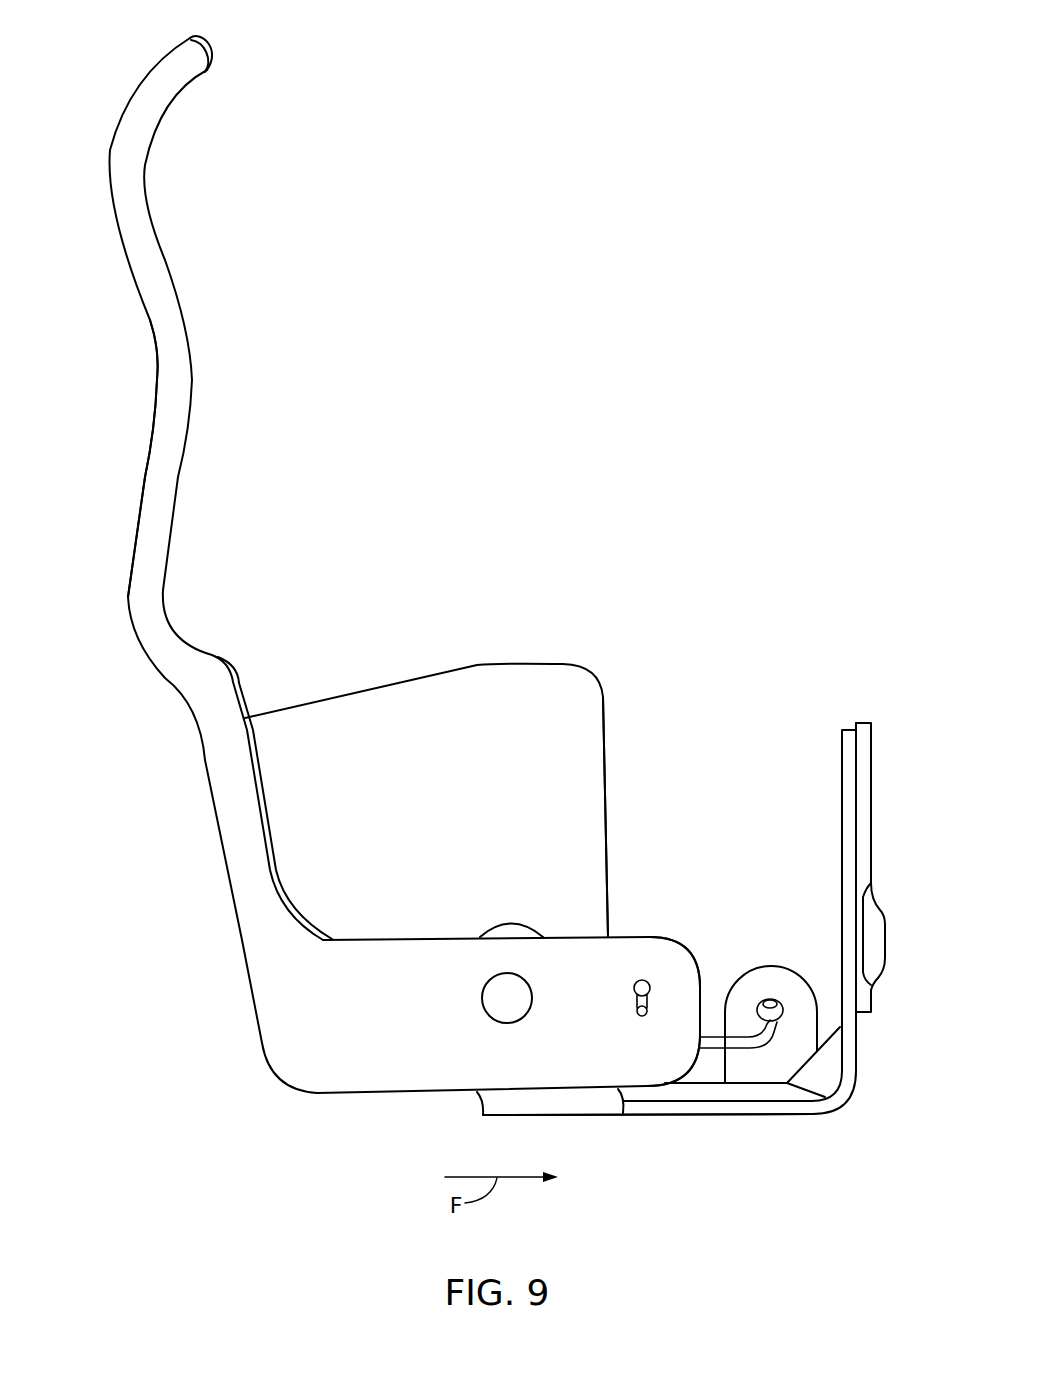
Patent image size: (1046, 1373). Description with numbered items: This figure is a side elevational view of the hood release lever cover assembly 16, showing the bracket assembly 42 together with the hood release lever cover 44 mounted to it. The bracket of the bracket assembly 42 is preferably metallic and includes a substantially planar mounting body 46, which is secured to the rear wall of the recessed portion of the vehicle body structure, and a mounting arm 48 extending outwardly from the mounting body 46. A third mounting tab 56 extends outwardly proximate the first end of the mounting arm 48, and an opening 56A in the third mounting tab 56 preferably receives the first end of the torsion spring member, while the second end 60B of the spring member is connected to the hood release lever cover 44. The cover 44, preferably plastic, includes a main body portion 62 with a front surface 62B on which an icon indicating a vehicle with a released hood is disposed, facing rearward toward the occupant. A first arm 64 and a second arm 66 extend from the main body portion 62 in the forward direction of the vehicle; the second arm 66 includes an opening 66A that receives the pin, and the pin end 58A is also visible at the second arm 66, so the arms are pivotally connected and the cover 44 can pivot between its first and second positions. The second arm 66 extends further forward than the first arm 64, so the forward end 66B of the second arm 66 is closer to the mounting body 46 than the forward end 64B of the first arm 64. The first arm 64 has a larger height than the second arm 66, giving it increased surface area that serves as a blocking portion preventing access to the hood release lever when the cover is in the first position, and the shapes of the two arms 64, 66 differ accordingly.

The hood release lever cover assembly 16 is at (615, 390).
The bracket assembly 42 is at (826, 1124).
The hood release lever cover 44 is at (145, 477).
The mounting body 46 is at (871, 842).
The mounting arm 48 is at (750, 1107).
The third mounting tab 56 is at (797, 1007).
The opening 56A is at (770, 1005).
The aperture 58A is at (507, 1003).
The second end of the spring member 60B is at (642, 1014).
The main body portion 62 is at (160, 285).
The front surface 62B is at (157, 380).
The first arm 64 is at (375, 743).
The forward end of the first arm 64B is at (608, 753).
The second arm 66 is at (392, 997).
The opening 66A is at (642, 984).
The forward end of the second arm 66B is at (670, 967).